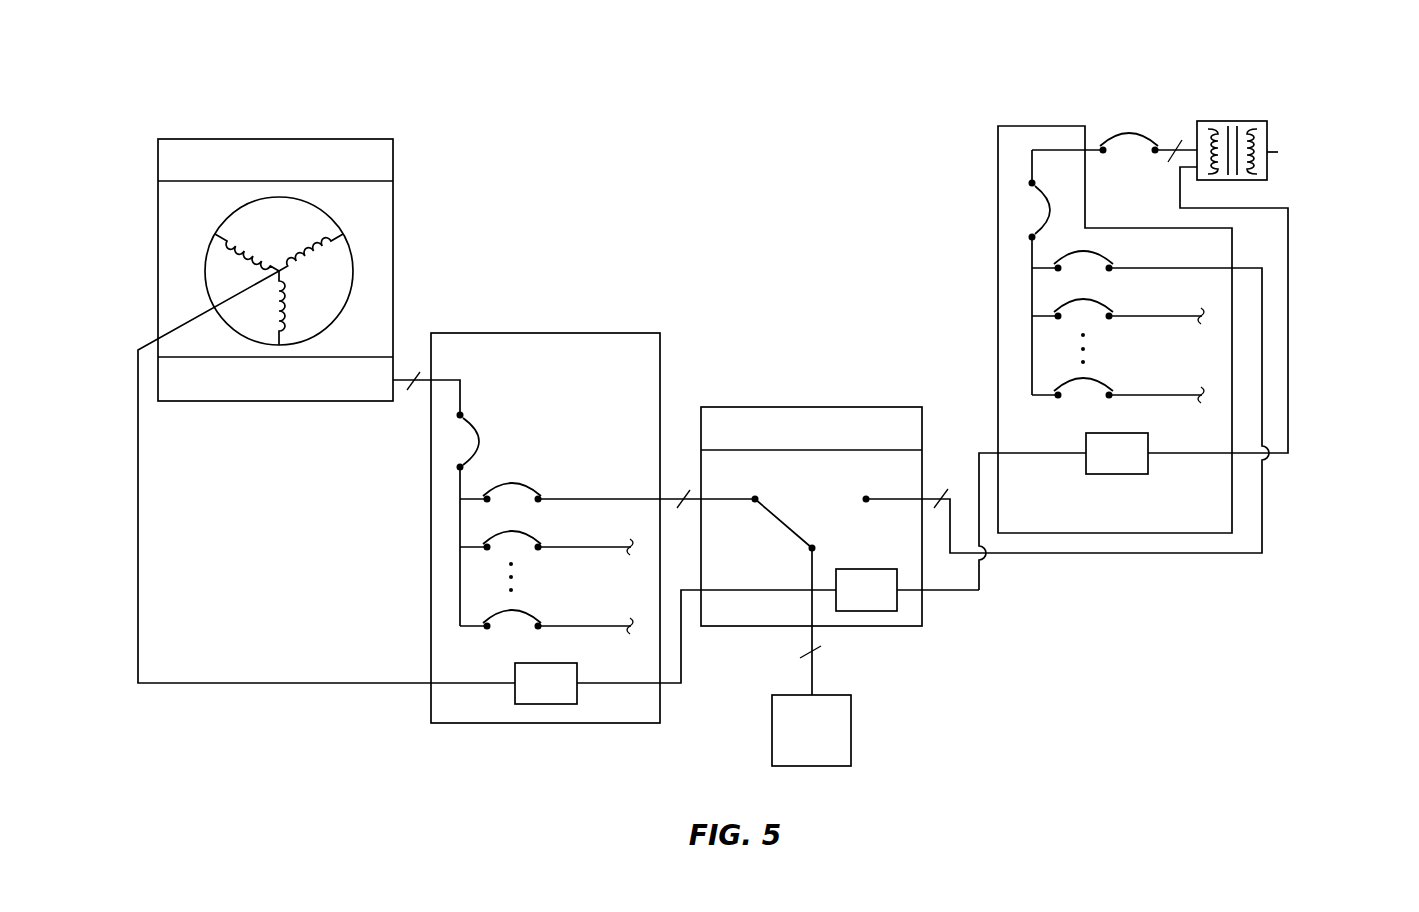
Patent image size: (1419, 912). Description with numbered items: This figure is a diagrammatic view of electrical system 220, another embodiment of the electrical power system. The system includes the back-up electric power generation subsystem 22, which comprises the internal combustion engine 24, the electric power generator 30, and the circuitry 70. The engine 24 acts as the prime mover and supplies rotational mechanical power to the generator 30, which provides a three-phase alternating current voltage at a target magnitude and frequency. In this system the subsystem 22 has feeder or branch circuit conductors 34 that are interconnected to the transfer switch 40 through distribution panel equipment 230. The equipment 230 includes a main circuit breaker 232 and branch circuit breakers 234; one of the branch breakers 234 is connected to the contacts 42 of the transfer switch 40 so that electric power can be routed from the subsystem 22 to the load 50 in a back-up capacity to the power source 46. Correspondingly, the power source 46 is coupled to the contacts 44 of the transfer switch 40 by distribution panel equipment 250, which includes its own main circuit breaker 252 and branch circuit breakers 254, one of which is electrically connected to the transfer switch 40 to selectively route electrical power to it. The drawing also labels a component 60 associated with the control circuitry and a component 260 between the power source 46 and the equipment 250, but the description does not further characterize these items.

The back-up electric power generation subsystem 22 is at (228, 122).
The internal combustion engine 24 is at (395, 161).
The electric power generator 30 is at (406, 232).
The feeder or branch circuit conductors 34 is at (395, 398).
The transfer switch 40 is at (878, 405).
The contacts 42 is at (753, 494).
The contacts 44 is at (864, 502).
The power source 46 is at (1232, 120).
The load 50 is at (854, 729).
The control circuitry 60 is at (292, 418).
The circuitry 70 is at (208, 402).
The electrical system 220 is at (1260, 98).
The distribution panel equipment 230 is at (544, 331).
The main circuit breaker 232 is at (482, 430).
The branch circuit breakers 234 is at (509, 475).
The distribution panel equipment 250 is at (998, 212).
The main circuit breaker 252 is at (1052, 202).
The branch circuit breakers 254 is at (1092, 247).
The utility main switch 260 is at (1130, 130).